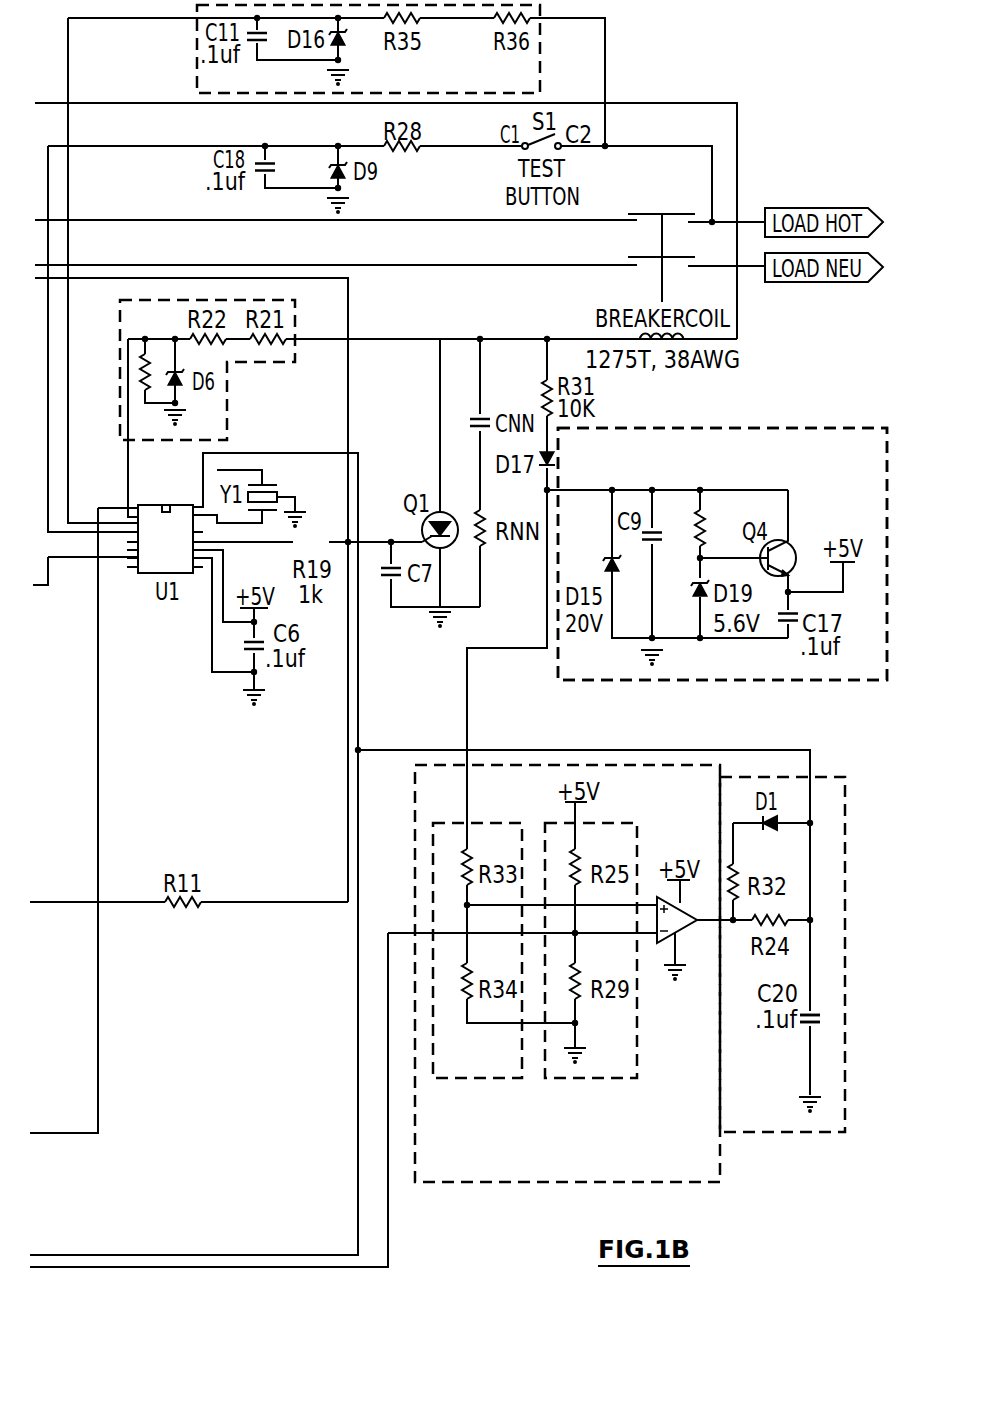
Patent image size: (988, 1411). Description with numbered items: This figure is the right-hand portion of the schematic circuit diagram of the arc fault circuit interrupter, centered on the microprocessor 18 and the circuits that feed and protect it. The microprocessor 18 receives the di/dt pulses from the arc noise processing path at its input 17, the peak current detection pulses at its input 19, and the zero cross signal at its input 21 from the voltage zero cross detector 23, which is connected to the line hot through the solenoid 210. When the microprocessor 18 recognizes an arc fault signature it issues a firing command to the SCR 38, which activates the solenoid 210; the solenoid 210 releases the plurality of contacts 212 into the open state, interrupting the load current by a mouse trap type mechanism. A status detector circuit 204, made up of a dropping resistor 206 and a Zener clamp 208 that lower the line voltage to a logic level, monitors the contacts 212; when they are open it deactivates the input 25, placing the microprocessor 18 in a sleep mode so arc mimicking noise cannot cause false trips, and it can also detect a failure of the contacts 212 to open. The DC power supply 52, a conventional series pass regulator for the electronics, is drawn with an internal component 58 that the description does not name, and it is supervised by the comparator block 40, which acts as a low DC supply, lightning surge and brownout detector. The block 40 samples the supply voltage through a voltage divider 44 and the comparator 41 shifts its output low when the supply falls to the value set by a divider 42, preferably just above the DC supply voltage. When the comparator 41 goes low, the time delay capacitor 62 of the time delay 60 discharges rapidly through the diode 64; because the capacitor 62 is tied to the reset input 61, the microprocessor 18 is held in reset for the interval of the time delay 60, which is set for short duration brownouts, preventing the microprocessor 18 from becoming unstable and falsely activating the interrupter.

The status detector circuit 204 is at (544, 27).
The dropping resistor 206 is at (422, 22).
The Zener clamp 208 is at (343, 42).
The solenoid 210 is at (742, 362).
The contacts 212 is at (643, 256).
The input 21 is at (128, 358).
The input 25 is at (68, 428).
The voltage zero cross detector 23 is at (258, 365).
The input 19 is at (110, 507).
The reset input 61 is at (197, 503).
The input 17 is at (80, 558).
The microprocessor 18 is at (143, 575).
The SCR 38 is at (422, 530).
The DC power supply 52 is at (808, 428).
The bias resistor 58 is at (657, 537).
The time delay 60 is at (833, 777).
The voltage divider 44 is at (488, 823).
The divider 42 is at (637, 843).
The diode 64 is at (770, 830).
The comparator 41 is at (677, 935).
The time delay capacitor 62 is at (805, 1028).
The comparator block 40 is at (505, 1183).